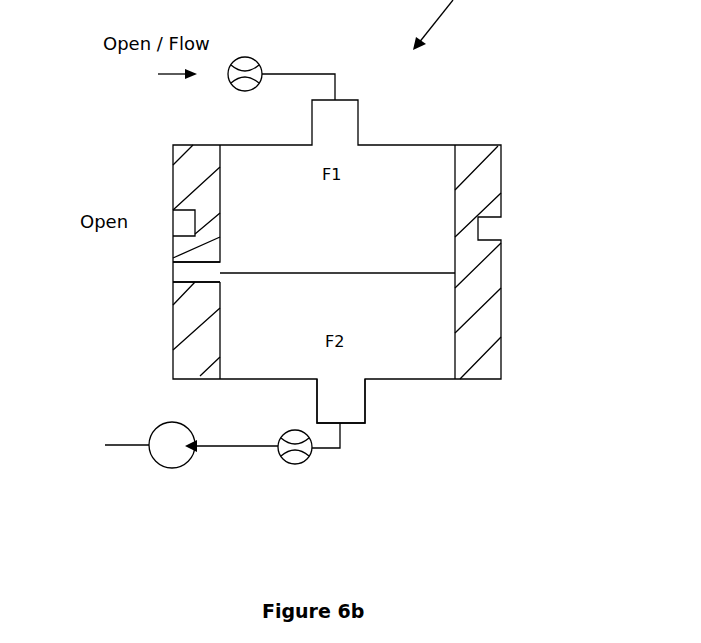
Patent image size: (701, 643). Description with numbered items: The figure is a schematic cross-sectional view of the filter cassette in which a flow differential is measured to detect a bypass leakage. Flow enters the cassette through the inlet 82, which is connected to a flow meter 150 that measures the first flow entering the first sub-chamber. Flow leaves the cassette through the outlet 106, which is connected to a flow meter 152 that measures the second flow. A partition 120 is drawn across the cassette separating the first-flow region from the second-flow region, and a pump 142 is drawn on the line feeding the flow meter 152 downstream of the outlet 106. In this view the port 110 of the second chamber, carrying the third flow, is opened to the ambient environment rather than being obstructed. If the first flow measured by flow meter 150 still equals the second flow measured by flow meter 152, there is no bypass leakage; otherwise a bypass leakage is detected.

The inlet 82 is at (342, 135).
The outlet 106 is at (348, 388).
The port 110 is at (217, 272).
The partition 120 is at (353, 273).
The pump 142 is at (162, 422).
The flow meter 150 is at (257, 58).
The flow meter 152 is at (310, 458).